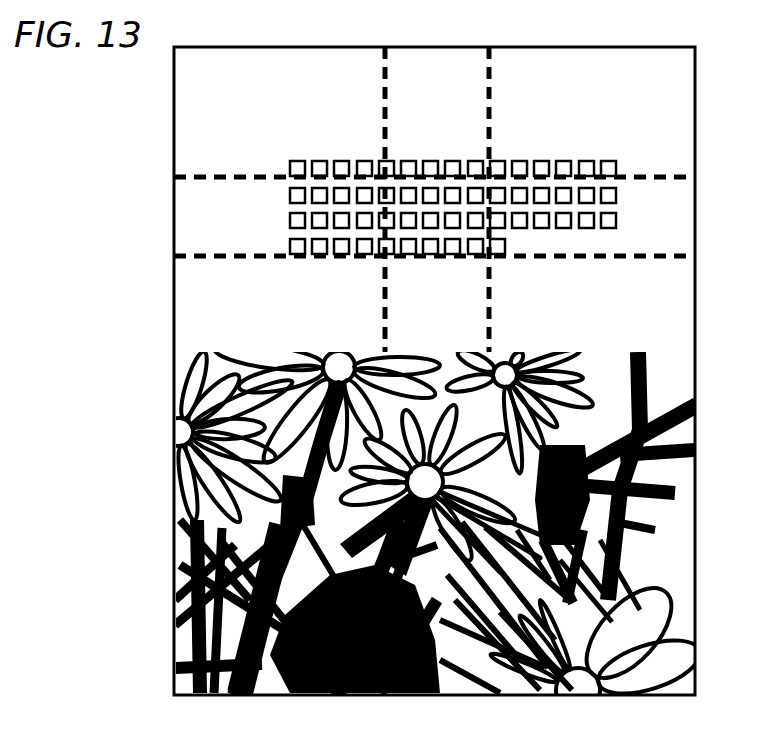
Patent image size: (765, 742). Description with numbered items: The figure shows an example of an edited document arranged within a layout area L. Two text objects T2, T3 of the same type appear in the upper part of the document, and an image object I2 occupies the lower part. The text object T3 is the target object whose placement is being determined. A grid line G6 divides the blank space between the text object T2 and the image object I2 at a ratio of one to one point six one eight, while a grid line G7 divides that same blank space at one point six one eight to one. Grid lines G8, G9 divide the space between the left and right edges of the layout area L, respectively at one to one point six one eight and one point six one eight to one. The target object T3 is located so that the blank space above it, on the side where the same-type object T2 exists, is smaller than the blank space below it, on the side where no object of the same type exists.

The text object T2 is at (207, 109).
The target object T3 is at (290, 212).
The grid line G6 is at (660, 180).
The grid line G7 is at (665, 258).
The grid line G8 is at (385, 47).
The grid line G9 is at (489, 47).
The layout area L is at (697, 358).
The image object I2 is at (645, 522).